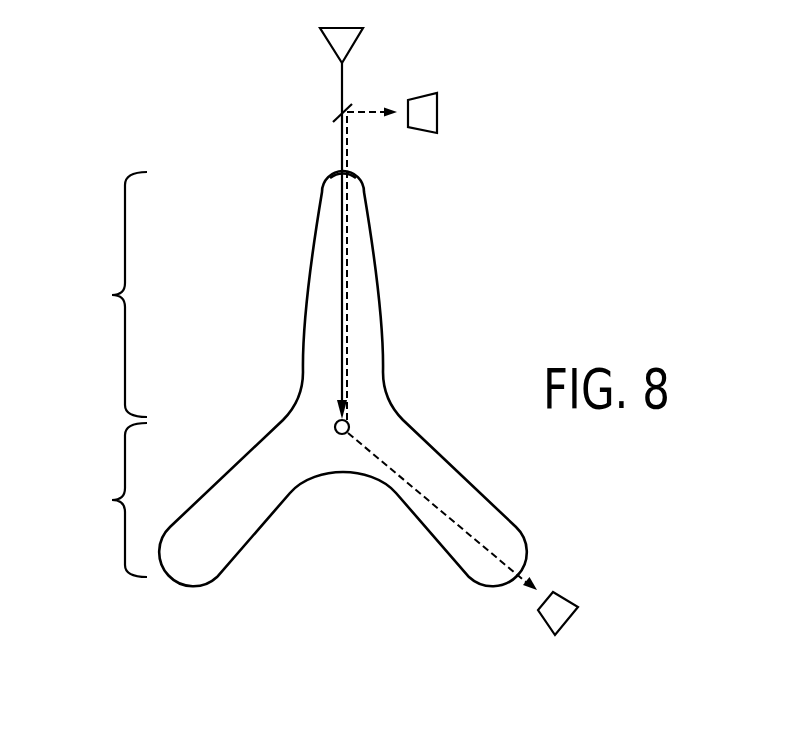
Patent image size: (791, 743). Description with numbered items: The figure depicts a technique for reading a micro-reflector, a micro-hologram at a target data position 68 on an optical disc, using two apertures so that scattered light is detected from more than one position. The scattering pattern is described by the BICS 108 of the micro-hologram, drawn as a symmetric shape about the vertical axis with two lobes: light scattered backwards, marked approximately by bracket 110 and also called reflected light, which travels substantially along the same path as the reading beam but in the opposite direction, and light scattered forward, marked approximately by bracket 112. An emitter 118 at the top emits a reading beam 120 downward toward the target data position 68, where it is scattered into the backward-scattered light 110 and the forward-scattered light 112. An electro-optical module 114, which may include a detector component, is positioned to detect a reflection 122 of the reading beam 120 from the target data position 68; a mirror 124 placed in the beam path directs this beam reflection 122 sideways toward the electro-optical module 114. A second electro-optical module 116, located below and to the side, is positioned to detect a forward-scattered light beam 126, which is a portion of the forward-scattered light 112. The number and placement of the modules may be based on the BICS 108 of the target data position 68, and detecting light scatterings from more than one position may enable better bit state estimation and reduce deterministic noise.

The target data position 68 is at (336, 433).
The BICS 108 is at (377, 266).
The backward-scattered light 110 is at (112, 295).
The forward-scattered light 112 is at (112, 500).
The electro-optical module 114 is at (438, 110).
The second electro-optical module 116 is at (570, 600).
The emitter 118 is at (352, 47).
The reading beam 120 is at (341, 89).
The reflection 122 is at (347, 171).
The mirror 124 is at (334, 122).
The forward-scattered light beam 126 is at (443, 506).